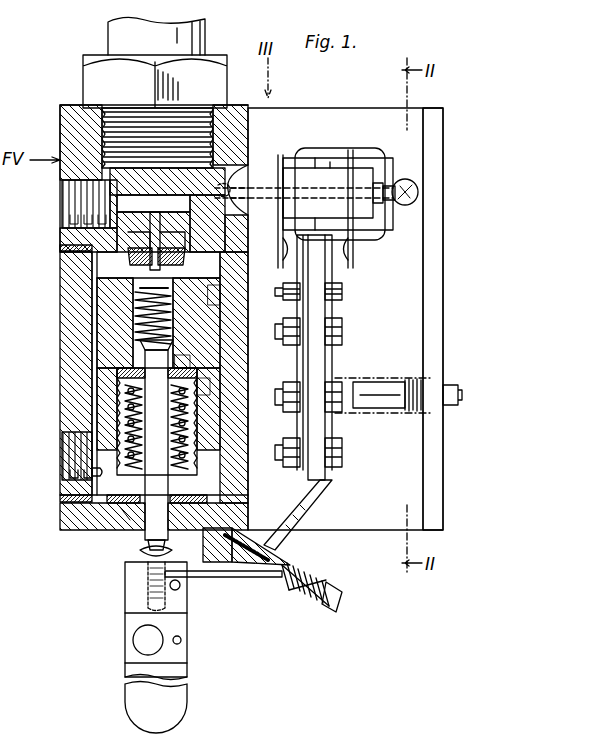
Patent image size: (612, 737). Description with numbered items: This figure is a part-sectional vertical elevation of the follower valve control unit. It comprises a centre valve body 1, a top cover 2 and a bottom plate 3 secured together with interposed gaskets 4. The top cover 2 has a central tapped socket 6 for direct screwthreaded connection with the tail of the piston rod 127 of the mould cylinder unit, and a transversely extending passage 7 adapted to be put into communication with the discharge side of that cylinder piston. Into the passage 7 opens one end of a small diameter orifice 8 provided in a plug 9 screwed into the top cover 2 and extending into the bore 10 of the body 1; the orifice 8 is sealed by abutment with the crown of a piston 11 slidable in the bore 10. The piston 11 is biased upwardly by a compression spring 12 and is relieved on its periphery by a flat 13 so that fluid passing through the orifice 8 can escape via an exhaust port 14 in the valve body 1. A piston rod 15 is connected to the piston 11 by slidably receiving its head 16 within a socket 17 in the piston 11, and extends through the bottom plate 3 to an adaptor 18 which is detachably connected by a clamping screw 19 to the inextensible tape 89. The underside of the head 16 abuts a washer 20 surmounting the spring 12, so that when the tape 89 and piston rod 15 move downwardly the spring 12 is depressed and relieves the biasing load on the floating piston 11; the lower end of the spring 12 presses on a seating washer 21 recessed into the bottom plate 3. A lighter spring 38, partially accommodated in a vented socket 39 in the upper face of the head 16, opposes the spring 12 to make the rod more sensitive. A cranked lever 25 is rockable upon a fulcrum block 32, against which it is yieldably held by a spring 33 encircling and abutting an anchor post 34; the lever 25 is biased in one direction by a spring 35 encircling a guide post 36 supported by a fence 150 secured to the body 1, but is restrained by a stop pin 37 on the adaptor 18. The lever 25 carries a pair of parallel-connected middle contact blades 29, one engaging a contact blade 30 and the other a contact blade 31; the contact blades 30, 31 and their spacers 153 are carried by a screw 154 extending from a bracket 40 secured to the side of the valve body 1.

The piston rod 127 is at (106, 30).
The central tapped socket 6 is at (120, 125).
The top cover 2 is at (64, 134).
The transversely extending passage 7 is at (110, 197).
The gaskets 4 is at (70, 247).
The small diameter orifice 8 is at (130, 258).
The plug 9 is at (180, 260).
The piston 11 is at (103, 299).
The centre valve body 1 is at (75, 328).
The head 16 is at (137, 352).
The flat 13 is at (95, 380).
The piston rod 15 is at (150, 408).
The exhaust port 14 is at (68, 441).
The bore 10 is at (92, 472).
The bottom plate 3 is at (70, 520).
The seating washer 21 is at (120, 512).
The adaptor 18 is at (125, 590).
The clamping screw 19 is at (140, 639).
The tape 89 is at (127, 698).
The bracket 40 is at (233, 215).
The socket 17 is at (215, 292).
The lighter spring 38 is at (170, 296).
The vented socket 39 is at (192, 362).
The washer 20 is at (212, 382).
The compression spring 12 is at (186, 432).
The contact blade 30 is at (278, 248).
The contact blade 31 is at (352, 258).
The middle contact blades 29 is at (340, 272).
The fence 150 is at (444, 322).
The spacers 153 is at (378, 165).
The screw 154 is at (418, 196).
The guide post 36 is at (376, 385).
The spring 35 is at (413, 411).
The cranked lever 25 is at (305, 490).
The fulcrum block 32 is at (225, 568).
The stop pin 37 is at (180, 589).
The spring 33 is at (306, 605).
The anchor post 34 is at (340, 598).